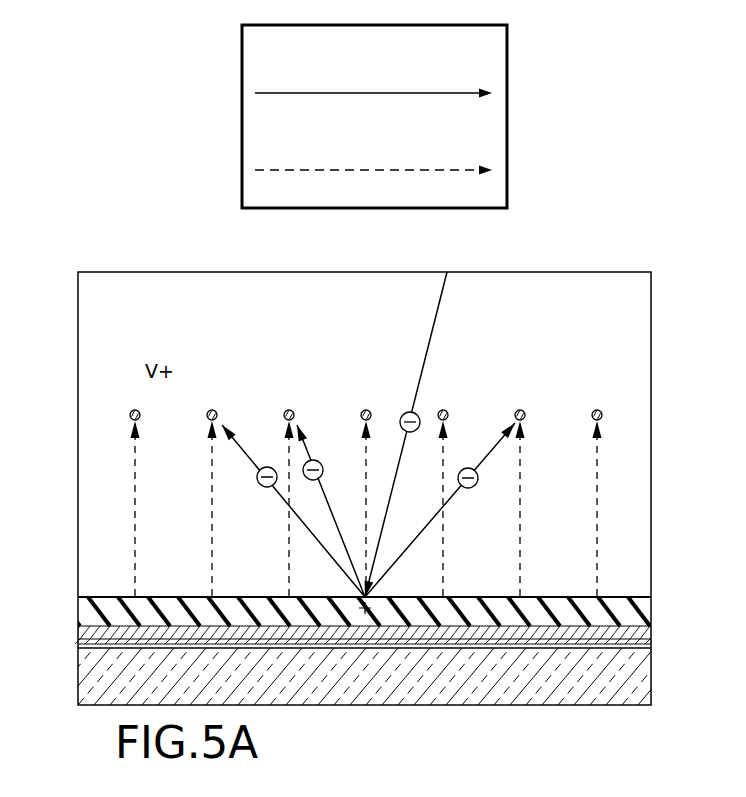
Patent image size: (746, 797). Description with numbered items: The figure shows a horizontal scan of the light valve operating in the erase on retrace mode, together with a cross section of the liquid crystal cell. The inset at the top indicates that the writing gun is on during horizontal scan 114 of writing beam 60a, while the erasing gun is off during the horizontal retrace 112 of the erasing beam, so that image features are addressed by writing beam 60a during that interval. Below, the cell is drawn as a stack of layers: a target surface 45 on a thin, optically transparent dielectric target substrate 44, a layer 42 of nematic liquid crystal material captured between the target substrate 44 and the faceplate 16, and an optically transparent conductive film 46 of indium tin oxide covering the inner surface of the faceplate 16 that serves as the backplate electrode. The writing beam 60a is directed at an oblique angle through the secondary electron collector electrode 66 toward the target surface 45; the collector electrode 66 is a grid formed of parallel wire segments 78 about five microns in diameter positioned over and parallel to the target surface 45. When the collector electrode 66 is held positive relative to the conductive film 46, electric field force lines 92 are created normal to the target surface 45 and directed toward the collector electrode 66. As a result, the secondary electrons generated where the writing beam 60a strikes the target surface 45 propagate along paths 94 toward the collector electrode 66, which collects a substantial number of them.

The horizontal retrace of erasing beam 112 is at (272, 157).
The horizontal scan of writing beam 114 is at (427, 95).
The secondary electron collector electrode 66 is at (264, 370).
The writing electron beam 60a is at (425, 357).
The secondary electron paths 94 is at (325, 497).
The wire segments 78 is at (588, 417).
The electric field force lines 92 is at (112, 536).
The target surface 45 is at (607, 598).
The target substrate 44 is at (642, 610).
The layer of nematic liquid crystal material 42 is at (645, 637).
The conductive film 46 is at (645, 645).
The faceplate 16 is at (640, 697).